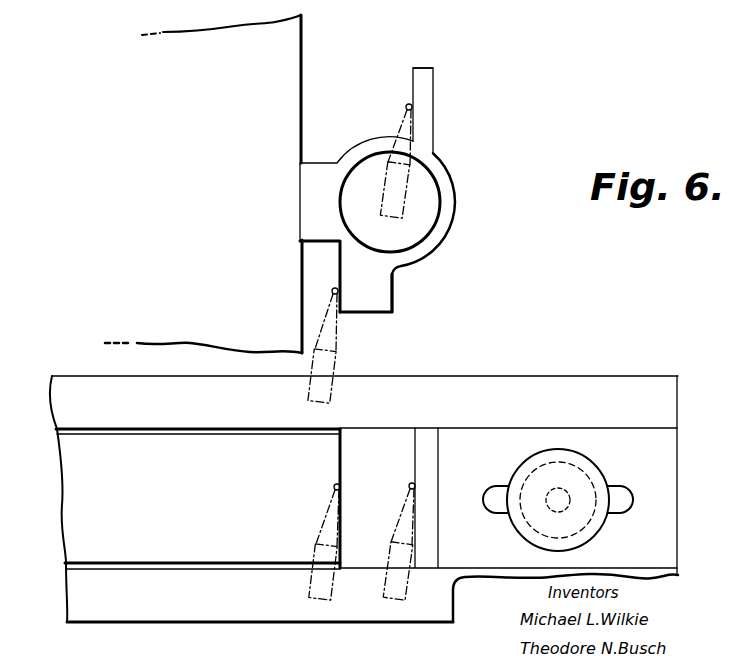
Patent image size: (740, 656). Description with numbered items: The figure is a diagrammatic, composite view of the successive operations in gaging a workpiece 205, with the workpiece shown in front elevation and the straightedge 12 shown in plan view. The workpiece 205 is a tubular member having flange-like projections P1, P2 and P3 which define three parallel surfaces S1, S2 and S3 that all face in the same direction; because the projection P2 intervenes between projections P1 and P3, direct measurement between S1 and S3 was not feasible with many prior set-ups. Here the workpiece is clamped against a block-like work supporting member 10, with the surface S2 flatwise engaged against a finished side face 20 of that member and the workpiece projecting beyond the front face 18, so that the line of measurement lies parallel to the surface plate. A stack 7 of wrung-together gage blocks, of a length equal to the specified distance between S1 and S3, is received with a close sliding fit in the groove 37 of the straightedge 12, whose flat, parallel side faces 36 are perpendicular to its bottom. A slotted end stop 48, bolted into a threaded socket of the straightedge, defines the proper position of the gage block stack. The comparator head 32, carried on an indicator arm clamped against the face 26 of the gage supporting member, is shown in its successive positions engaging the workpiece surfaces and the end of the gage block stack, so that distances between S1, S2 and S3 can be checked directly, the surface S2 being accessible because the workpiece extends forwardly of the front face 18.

The side face 18 is at (288, 36).
The work supporting member 10 is at (288, 68).
The side face 20 is at (300, 92).
The surface S1 is at (413, 83).
The flange-like projection P1 is at (433, 97).
The flange-like projection P2 is at (315, 178).
The flange-like projection P3 is at (373, 293).
The surface S2 is at (300, 212).
The surface S3 is at (335, 287).
The workpiece 205 is at (440, 166).
The head 32 is at (400, 205).
The side faces 36 is at (470, 376).
The groove 37 is at (85, 507).
The stack of gage blocks 7 is at (362, 457).
The straightedge 12 is at (225, 613).
The face 26 is at (305, 622).
The slotted end stop 48 is at (655, 457).